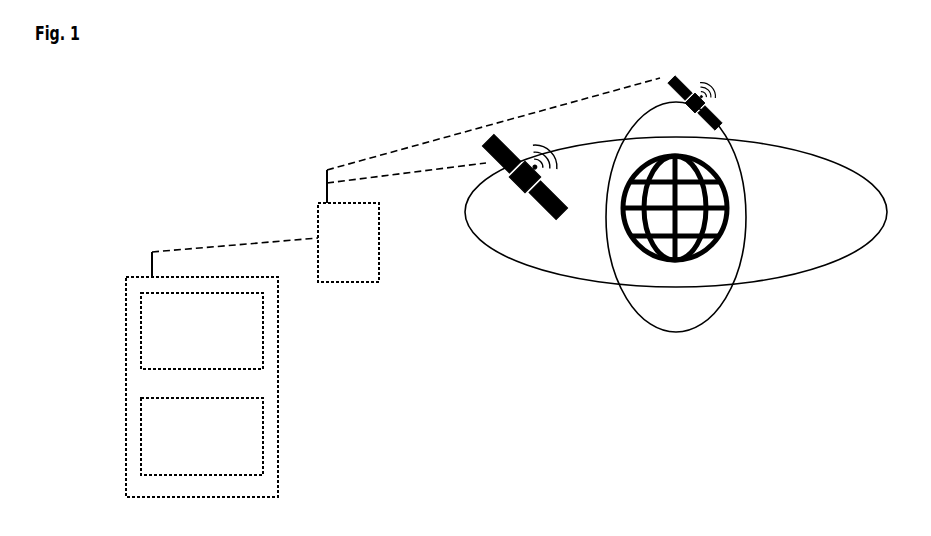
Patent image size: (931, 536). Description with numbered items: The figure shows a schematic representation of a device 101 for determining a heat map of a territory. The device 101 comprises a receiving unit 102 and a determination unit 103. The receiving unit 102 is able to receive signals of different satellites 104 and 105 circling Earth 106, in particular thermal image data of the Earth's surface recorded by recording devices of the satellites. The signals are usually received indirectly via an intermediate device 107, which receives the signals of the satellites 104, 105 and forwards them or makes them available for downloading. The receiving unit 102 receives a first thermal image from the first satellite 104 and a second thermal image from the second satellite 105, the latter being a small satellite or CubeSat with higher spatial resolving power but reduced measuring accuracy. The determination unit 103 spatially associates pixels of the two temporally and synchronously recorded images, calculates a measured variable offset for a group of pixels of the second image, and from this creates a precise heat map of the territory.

The device 101 is at (233, 367).
The receiving unit 102 is at (202, 331).
The determination unit 103 is at (202, 436).
The first satellite 104 is at (533, 182).
The second satellite 105 is at (693, 88).
The Earth 106 is at (676, 217).
The intermediate device 107 is at (489, 180).